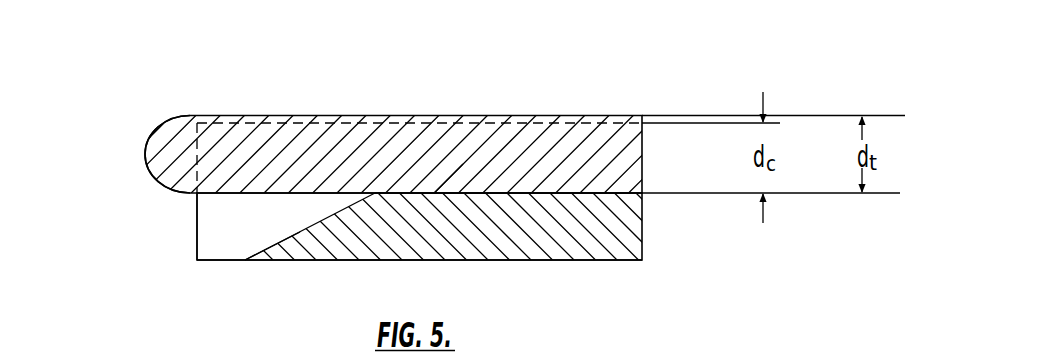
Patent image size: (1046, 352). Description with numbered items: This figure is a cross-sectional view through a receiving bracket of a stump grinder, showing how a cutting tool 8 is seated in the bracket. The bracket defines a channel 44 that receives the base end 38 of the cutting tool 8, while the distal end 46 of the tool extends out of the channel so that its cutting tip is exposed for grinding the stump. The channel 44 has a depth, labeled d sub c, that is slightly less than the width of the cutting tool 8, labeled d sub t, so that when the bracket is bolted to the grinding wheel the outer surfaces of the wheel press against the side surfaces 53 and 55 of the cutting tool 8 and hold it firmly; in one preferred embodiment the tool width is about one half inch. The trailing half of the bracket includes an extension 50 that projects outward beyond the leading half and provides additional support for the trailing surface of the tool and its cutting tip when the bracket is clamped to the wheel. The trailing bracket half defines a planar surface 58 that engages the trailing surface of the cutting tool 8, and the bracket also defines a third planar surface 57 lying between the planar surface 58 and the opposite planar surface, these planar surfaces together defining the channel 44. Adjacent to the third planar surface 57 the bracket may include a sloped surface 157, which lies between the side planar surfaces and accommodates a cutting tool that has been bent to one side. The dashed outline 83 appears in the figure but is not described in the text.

The cutting tool 8 is at (377, 116).
The side surface 55 is at (503, 116).
The coating boundary 83 is at (570, 123).
The distal end 46 is at (147, 159).
The channel 44 is at (600, 153).
The base end 38 is at (593, 197).
The side surface 53 is at (540, 193).
The third planar surface 57 is at (442, 193).
The sloped surface 157 is at (283, 235).
The extension 50 is at (212, 260).
The planar surface 58 is at (230, 218).